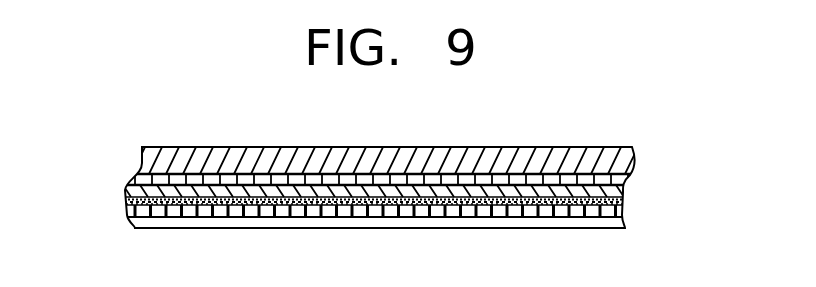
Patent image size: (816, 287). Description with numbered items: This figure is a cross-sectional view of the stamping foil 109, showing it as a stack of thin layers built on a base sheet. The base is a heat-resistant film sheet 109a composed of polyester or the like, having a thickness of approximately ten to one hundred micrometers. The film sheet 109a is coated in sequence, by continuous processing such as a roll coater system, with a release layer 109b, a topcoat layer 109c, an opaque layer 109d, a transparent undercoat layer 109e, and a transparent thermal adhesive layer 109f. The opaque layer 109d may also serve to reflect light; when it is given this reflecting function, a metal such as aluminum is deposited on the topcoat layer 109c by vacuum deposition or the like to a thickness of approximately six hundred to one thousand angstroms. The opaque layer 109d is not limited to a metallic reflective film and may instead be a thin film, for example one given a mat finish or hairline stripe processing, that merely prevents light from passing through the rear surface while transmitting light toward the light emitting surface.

The stamping foil 109 is at (547, 147).
The heat-resistant film sheet 109a is at (620, 152).
The release layer 109b is at (623, 180).
The topcoat layer 109c is at (623, 192).
The opaque layer 109d is at (624, 198).
The transparent undercoat layer 109e is at (128, 211).
The transparent thermal adhesive layer 109f is at (153, 222).